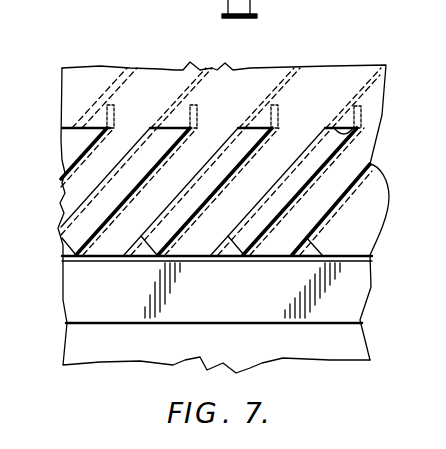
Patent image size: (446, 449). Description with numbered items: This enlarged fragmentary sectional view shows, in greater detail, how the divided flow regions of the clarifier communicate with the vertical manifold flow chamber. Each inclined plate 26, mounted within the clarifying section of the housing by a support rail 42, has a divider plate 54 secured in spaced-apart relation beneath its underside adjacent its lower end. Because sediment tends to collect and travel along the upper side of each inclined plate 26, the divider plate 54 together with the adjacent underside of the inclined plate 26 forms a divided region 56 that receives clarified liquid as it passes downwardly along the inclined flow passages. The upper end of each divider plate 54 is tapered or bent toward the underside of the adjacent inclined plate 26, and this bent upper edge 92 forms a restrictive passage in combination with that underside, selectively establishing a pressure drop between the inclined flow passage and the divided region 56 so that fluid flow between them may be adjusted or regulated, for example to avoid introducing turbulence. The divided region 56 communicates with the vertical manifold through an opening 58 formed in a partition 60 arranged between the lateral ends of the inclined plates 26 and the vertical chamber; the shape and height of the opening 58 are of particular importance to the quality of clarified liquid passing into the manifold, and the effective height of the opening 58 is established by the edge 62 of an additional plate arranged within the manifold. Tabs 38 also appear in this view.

The inclined plate 26 is at (109, 87).
The divided region 56 is at (163, 60).
The tab 38 is at (243, 18).
The bent upper edge 92 is at (122, 110).
The edge 62 is at (350, 135).
The opening 58 is at (66, 166).
The partition 60 is at (69, 181).
The divider plate 54 is at (113, 209).
The support rail 42 is at (265, 312).